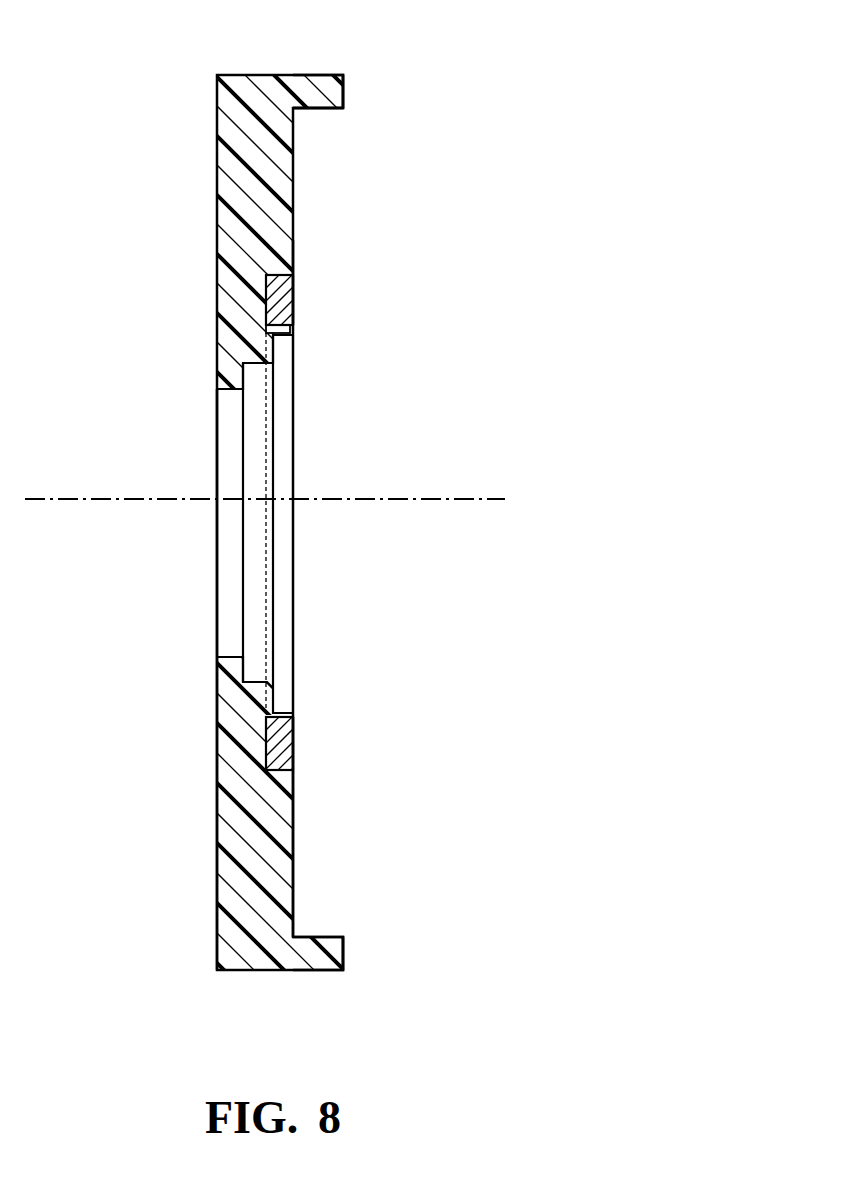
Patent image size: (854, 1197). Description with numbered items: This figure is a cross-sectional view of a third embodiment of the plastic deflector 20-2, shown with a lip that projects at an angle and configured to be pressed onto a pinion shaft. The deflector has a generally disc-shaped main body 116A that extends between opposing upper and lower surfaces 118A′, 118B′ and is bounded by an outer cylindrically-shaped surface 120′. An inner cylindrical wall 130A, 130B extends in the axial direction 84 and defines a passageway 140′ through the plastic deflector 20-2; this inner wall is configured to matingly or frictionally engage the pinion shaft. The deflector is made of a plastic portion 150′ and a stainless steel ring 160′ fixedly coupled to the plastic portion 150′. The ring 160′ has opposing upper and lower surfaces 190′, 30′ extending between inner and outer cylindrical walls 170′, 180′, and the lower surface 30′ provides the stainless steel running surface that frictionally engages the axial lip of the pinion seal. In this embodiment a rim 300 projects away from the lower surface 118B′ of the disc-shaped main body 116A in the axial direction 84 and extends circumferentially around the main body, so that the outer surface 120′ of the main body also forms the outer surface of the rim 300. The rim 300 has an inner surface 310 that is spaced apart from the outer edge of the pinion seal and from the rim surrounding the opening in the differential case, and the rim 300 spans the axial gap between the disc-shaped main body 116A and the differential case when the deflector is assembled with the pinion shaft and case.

The plastic deflector 20-2 is at (118, 212).
The outer cylindrically-shaped surface 120′ is at (253, 75).
The rim 300 is at (343, 92).
The inner surface 310 is at (320, 110).
The plastic portion 150′ is at (266, 152).
The outer cylindrical wall 180′ is at (283, 252).
The stainless steel ring 160′ is at (299, 283).
The lower surface 30′ is at (294, 306).
The inner cylindrical wall 170′ is at (286, 334).
The upper surface 190′ is at (262, 308).
The inner cylindrical wall 130B is at (254, 366).
The inner cylindrical wall 130A is at (228, 380).
The axial direction 84 is at (418, 499).
The passageway 140′ is at (258, 538).
The disc-shaped main body 116A is at (216, 732).
The upper surface 118A′ is at (216, 825).
The lower surface 118B′ is at (293, 878).